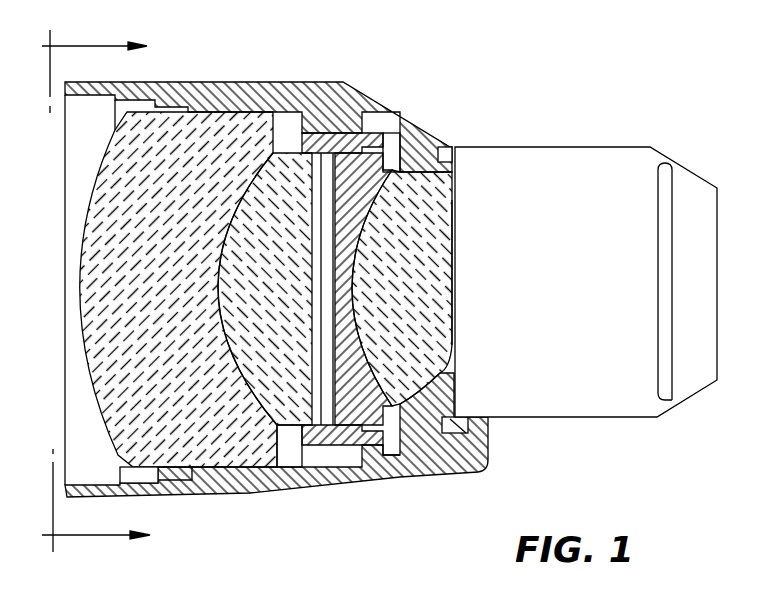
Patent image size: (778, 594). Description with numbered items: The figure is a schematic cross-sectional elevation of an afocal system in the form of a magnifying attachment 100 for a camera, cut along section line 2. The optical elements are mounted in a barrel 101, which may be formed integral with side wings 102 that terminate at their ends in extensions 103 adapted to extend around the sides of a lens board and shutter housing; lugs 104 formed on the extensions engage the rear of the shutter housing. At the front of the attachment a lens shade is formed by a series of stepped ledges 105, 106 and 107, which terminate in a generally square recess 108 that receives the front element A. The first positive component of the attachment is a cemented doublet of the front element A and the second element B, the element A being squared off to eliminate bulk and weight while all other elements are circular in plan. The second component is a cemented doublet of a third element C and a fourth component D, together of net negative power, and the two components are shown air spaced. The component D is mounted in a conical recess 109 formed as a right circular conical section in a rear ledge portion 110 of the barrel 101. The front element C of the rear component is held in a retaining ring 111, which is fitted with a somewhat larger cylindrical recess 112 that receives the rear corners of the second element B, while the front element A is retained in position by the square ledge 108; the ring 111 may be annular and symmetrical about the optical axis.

The section line 2- 2 is at (103, 291).
The magnifying attachment 100 is at (407, 93).
The barrel 101 is at (387, 487).
The side wings 102 is at (455, 155).
The extensions 103 is at (580, 153).
The lugs 104 is at (658, 365).
The stepped ledge 105 is at (92, 486).
The stepped ledge 106 is at (140, 478).
The stepped ledge 107 is at (177, 487).
The square recess 108 is at (298, 468).
The conical recess 109 is at (458, 342).
The rear ledge portion 110 is at (452, 416).
The retaining ring 111 is at (365, 132).
The cylindrical recess 112 is at (397, 452).
The front element A is at (97, 400).
The second element B is at (265, 310).
The third element C is at (387, 160).
The fourth component D is at (454, 262).